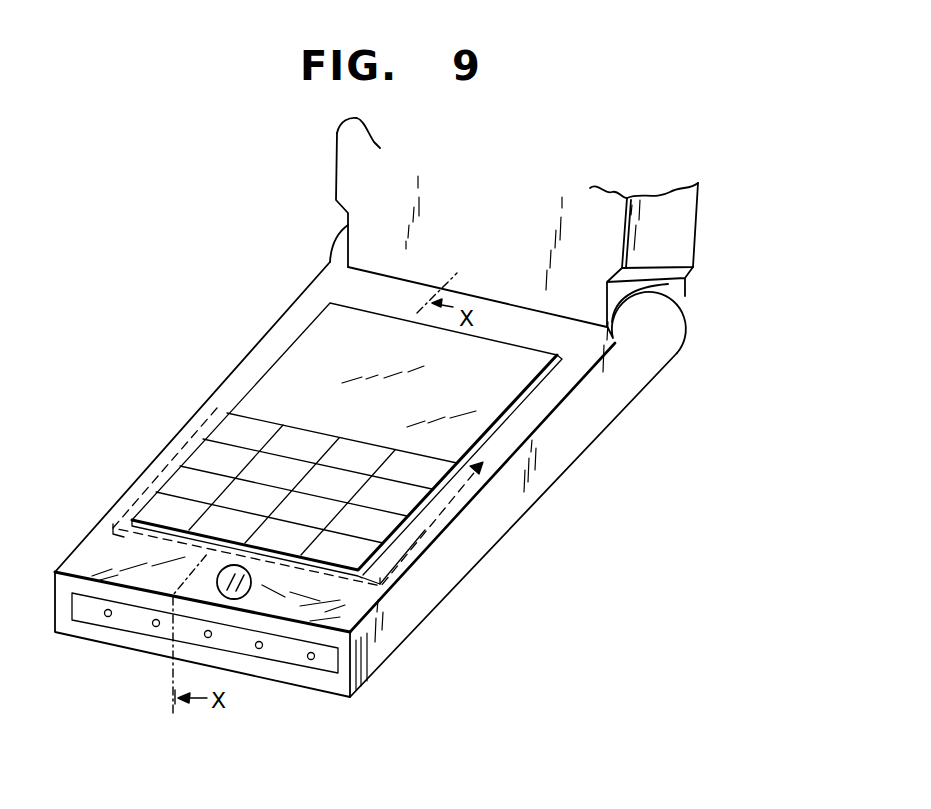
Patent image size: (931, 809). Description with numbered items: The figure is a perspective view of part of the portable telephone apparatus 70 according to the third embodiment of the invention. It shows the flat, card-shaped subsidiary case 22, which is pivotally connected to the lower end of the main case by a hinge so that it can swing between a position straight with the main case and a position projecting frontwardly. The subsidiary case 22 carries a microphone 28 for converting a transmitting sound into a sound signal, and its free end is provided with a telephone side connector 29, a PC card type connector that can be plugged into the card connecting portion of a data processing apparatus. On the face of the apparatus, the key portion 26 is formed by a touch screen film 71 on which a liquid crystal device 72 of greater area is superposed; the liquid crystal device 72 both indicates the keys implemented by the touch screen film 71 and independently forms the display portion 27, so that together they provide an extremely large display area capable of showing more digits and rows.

The subsidiary case 22 is at (532, 475).
The key portion 26 is at (177, 487).
The display portion 27 is at (475, 398).
The microphone 28 is at (230, 596).
The telephone side connector 29 is at (145, 618).
The portable telephone apparatus 70 is at (700, 330).
The touch screen film 71 is at (405, 553).
The liquid crystal device 72 is at (467, 428).